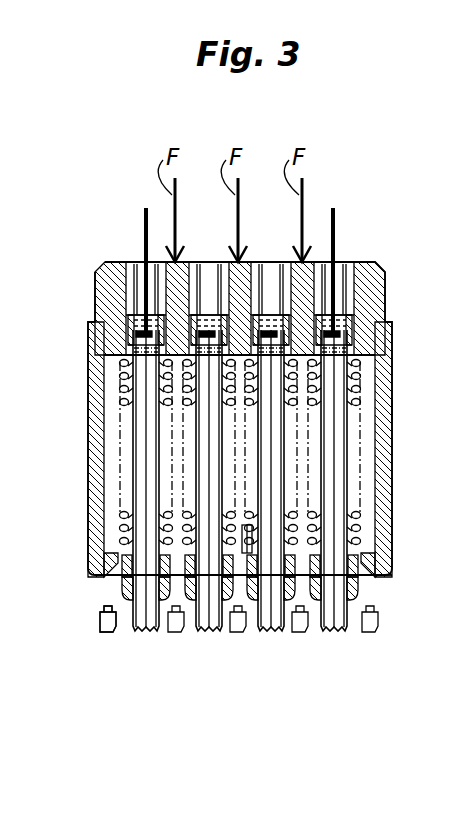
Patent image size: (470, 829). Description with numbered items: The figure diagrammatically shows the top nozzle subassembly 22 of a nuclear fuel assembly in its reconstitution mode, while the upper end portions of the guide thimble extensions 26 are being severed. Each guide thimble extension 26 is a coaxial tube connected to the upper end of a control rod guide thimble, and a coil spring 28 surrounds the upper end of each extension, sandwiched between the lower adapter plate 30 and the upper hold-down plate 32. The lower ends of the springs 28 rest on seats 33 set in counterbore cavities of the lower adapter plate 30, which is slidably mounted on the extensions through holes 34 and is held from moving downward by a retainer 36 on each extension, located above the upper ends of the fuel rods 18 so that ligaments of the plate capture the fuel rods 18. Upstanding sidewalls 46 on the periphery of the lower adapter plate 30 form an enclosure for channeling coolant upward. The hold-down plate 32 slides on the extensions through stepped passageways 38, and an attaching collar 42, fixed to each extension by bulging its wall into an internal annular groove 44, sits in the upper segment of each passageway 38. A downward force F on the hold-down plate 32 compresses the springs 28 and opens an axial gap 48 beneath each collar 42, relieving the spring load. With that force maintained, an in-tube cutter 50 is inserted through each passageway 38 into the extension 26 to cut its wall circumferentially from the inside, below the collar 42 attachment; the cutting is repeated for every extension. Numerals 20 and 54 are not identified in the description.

The fuel rods 18 is at (100, 622).
The connector body 20 is at (431, 409).
The top nozzle subassembly 22 is at (336, 206).
The guide thimble extension 26 is at (152, 620).
The coil spring 28 is at (437, 383).
The lower adapter plate 30 is at (97, 593).
The upper hold-down plate 32 is at (438, 268).
The seats 33 is at (90, 542).
The holes 34 is at (370, 580).
The retainer 36 is at (352, 580).
The passageway 38 is at (210, 280).
The attaching collar 42 is at (22, 305).
The internal annular groove 44 is at (462, 292).
The upstanding sidewalls 46 is at (90, 463).
The axial gap 48 is at (437, 348).
The in-tube cutter 50 is at (140, 240).
The lead 54 is at (58, 623).